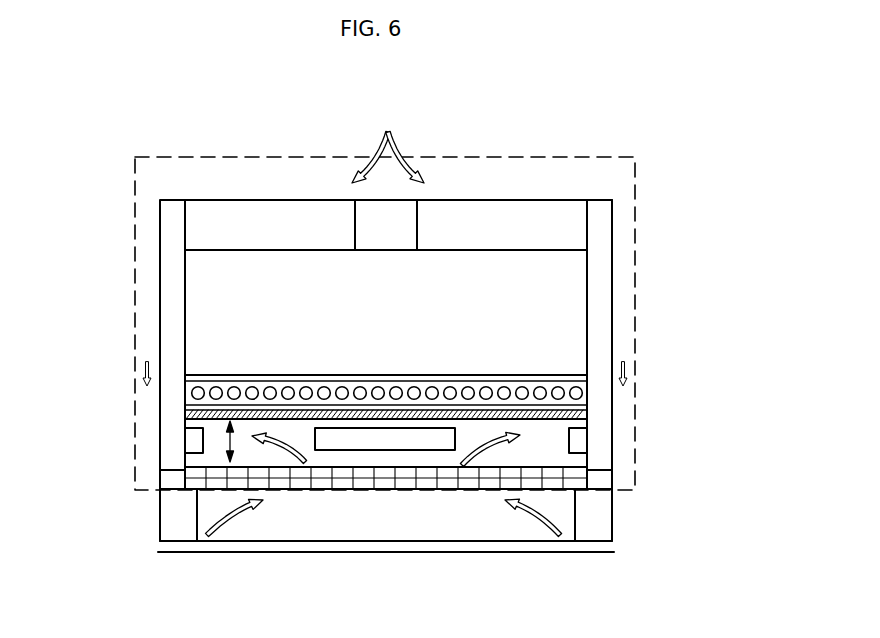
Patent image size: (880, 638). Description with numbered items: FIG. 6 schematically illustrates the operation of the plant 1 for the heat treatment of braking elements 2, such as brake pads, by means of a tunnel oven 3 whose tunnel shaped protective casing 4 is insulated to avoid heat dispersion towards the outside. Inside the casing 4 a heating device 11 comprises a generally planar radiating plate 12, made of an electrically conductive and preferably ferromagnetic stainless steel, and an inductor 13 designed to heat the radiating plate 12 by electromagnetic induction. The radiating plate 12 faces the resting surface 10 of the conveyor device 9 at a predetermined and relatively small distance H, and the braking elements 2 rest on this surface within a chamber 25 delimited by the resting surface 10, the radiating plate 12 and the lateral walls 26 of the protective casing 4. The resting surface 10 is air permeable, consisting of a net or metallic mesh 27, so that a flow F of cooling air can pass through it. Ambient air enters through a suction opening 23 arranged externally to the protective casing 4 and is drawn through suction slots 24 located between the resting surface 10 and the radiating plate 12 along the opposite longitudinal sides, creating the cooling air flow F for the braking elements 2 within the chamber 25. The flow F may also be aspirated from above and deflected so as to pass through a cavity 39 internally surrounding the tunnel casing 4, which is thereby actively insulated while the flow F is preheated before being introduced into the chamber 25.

The plant 1 is at (650, 101).
The cavity 39 is at (145, 236).
The lateral walls 26 is at (170, 290).
The protective casing 4 is at (618, 247).
The tunnel oven 3 is at (652, 349).
The heating device 11 is at (419, 351).
The inductor 13 is at (267, 376).
The radiating plate 12 is at (586, 413).
The chamber 25 is at (303, 426).
The distance H is at (212, 421).
The suction slots 24 is at (196, 441).
The braking elements 2 is at (408, 440).
The resting surface 10 is at (572, 492).
The metallic mesh 27 is at (333, 481).
The conveyor device 9 is at (464, 524).
The suction opening 23 is at (185, 524).
The cooling air flow F is at (388, 131).